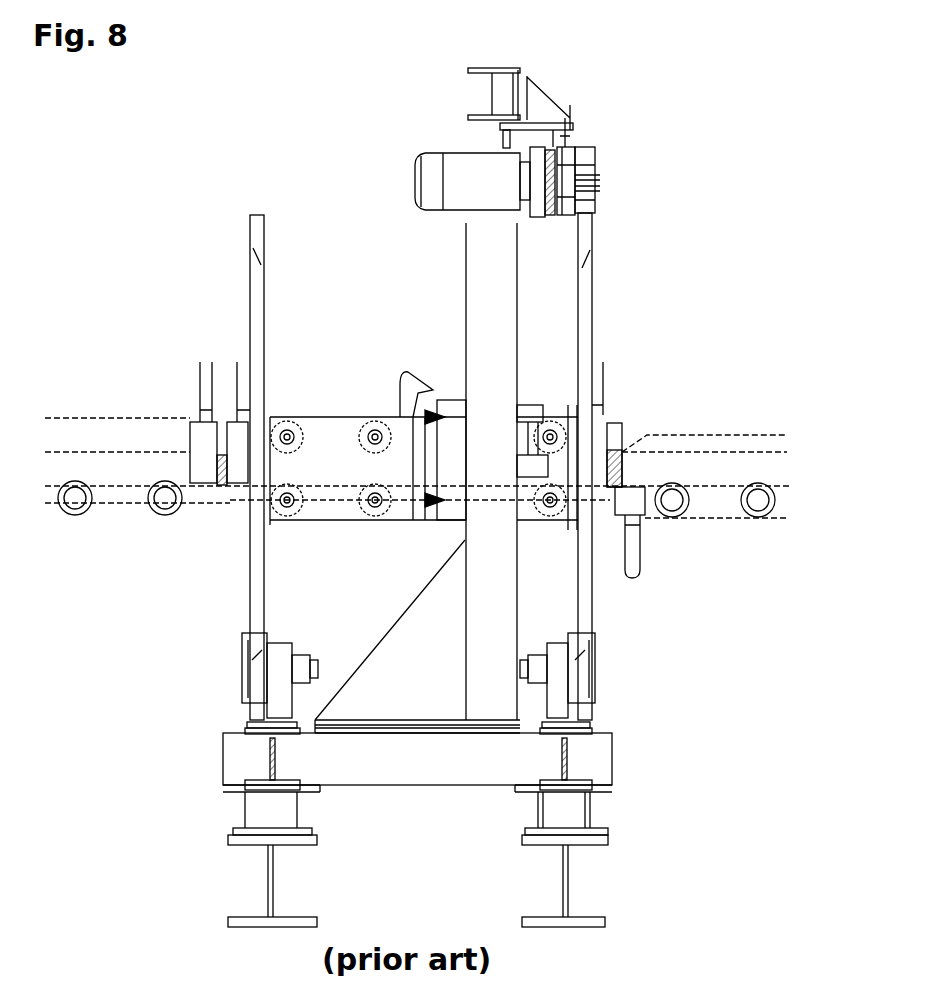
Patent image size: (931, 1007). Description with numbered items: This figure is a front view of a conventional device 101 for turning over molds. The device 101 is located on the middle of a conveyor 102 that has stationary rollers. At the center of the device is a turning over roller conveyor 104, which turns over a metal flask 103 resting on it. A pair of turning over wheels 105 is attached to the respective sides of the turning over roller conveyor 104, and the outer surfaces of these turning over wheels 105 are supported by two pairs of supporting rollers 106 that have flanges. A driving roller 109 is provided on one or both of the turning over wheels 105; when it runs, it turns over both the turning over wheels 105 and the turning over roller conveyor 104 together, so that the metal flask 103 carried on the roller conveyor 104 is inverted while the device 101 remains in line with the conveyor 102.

The device for turning over molds 101 is at (563, 83).
The conveyor 102 is at (75, 508).
The metal flask 103 is at (120, 480).
The turning over roller conveyor 104 is at (322, 510).
The turning over wheels 105 is at (257, 312).
The supporting rollers 106 is at (240, 655).
The driving roller 109 is at (596, 159).